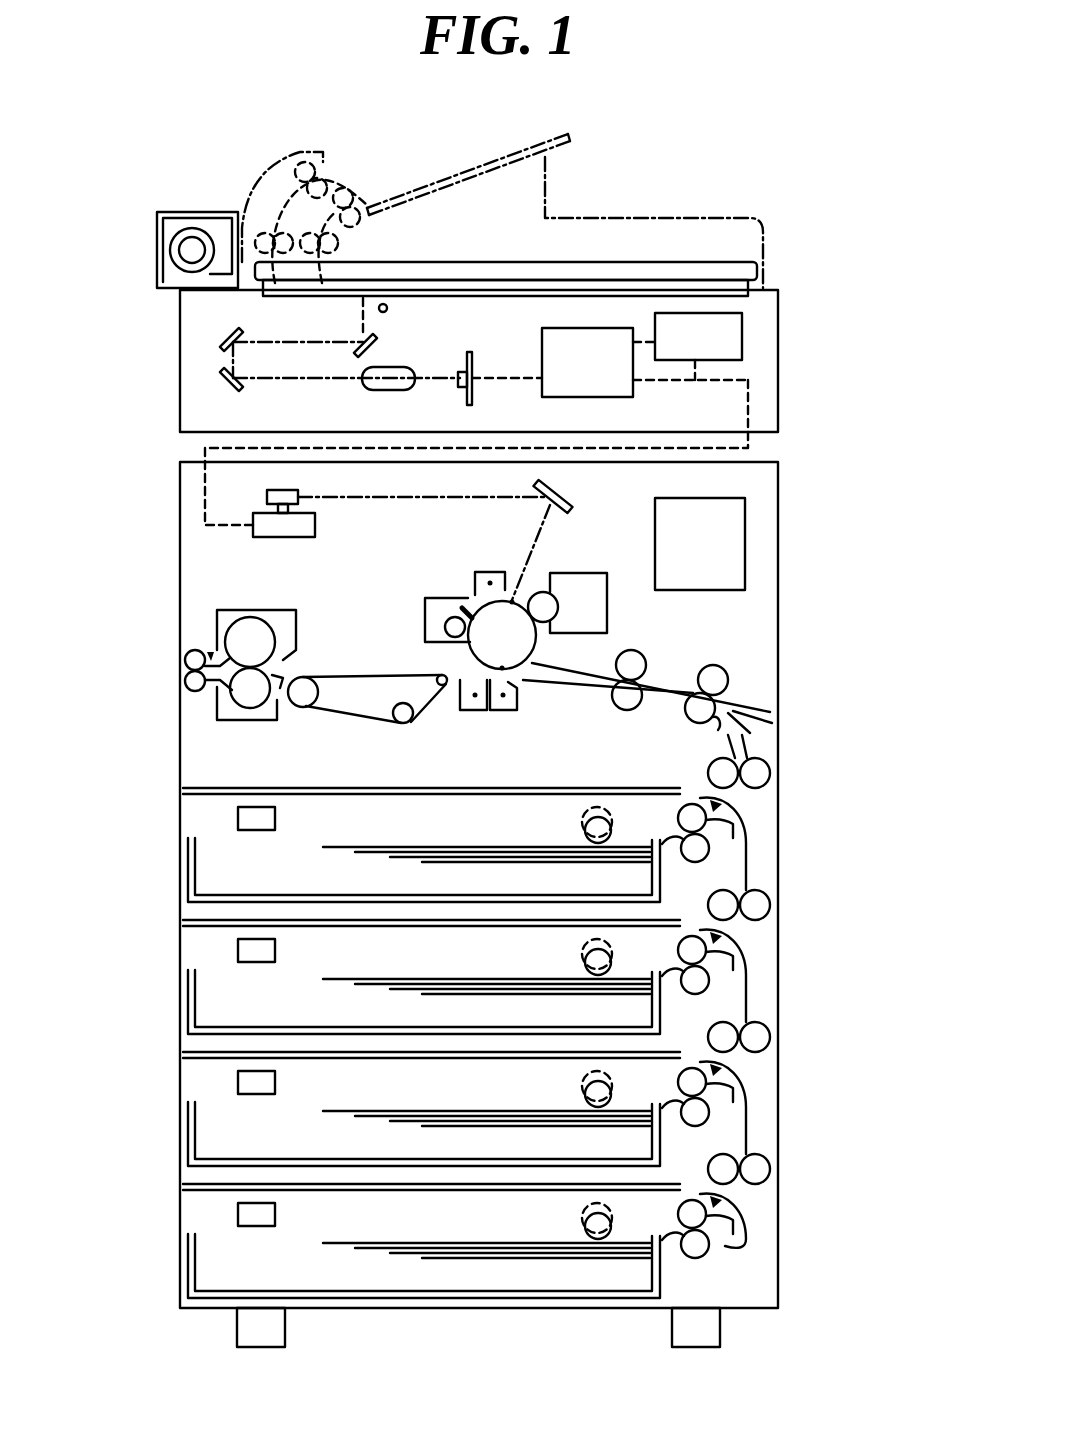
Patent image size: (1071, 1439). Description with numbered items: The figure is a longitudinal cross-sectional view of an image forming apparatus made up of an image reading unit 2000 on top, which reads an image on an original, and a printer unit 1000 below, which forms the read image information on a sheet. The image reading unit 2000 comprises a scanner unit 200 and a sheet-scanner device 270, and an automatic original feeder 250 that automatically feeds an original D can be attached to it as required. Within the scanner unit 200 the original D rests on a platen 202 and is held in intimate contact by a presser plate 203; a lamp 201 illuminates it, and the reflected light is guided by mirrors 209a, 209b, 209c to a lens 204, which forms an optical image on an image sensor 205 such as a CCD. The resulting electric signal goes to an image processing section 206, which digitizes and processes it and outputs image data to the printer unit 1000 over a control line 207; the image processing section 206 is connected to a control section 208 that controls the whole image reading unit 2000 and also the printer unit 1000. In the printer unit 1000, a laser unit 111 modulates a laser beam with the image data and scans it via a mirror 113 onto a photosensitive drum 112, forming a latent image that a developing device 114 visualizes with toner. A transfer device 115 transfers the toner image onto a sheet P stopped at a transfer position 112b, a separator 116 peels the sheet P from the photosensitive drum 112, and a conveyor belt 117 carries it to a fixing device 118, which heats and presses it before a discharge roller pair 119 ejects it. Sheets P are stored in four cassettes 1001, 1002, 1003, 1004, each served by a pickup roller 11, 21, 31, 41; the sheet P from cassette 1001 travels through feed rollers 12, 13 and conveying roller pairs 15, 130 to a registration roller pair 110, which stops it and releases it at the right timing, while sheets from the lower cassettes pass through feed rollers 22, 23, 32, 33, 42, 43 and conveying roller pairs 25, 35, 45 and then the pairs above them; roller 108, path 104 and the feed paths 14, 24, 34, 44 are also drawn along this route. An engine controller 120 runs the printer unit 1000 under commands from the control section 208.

The printer unit 1000 is at (790, 471).
The image reading unit 2000 is at (790, 358).
The scanner unit 200 is at (166, 339).
The automatic original feeder 250 is at (428, 183).
The sheet-scanner device 270 is at (197, 203).
The original D is at (562, 145).
The platen 202 is at (442, 282).
The presser plate 203 is at (518, 262).
The lamp 201 is at (390, 312).
The mirror 209a is at (372, 352).
The mirror 209b is at (245, 330).
The mirror 209c is at (235, 393).
The lens 204 is at (380, 391).
The image sensor 205 is at (478, 378).
The image processing section 206 is at (557, 398).
The control line 207 is at (750, 398).
The control section 208 is at (745, 325).
The laser unit 111 is at (283, 539).
The photosensitive drum 112 is at (478, 612).
The transfer position 112b is at (478, 661).
The mirror 113 is at (566, 486).
The developing device 114 is at (565, 573).
The transfer device 115 is at (503, 712).
The separator 116 is at (478, 712).
The conveyor belt 117 is at (322, 715).
The fixing device 118 is at (247, 722).
The discharge roller pair 119 is at (187, 700).
The engine controller 120 is at (745, 545).
The registration roller 108 is at (640, 712).
The registration roller pair 110 is at (638, 650).
The conveying roller pair 130 is at (714, 669).
The vertical conveying path 104 is at (762, 688).
The cassette 1001 is at (180, 862).
The cassette 1002 is at (180, 994).
The cassette 1003 is at (180, 1126).
The cassette 1004 is at (180, 1258).
The sheet P is at (343, 848).
The pickup roller 11 is at (586, 832).
The feed roller 12 is at (678, 816).
The feed roller 13 is at (709, 848).
The sheet feed path 14 is at (712, 800).
The conveying roller pair 15 is at (770, 775).
The pickup roller 21 is at (586, 964).
The feed roller 22 is at (678, 948).
The feed roller 23 is at (709, 980).
The sheet feed path 24 is at (712, 932).
The conveying roller pair 25 is at (770, 907).
The pickup roller 31 is at (586, 1096).
The feed roller 32 is at (678, 1080).
The feed roller 33 is at (709, 1112).
The sheet feed path 34 is at (712, 1064).
The conveying roller pair 35 is at (770, 1039).
The pickup roller 41 is at (586, 1228).
The feed roller 42 is at (678, 1212).
The feed roller 43 is at (709, 1244).
The sheet feed path 44 is at (712, 1196).
The conveying roller pair 45 is at (770, 1171).